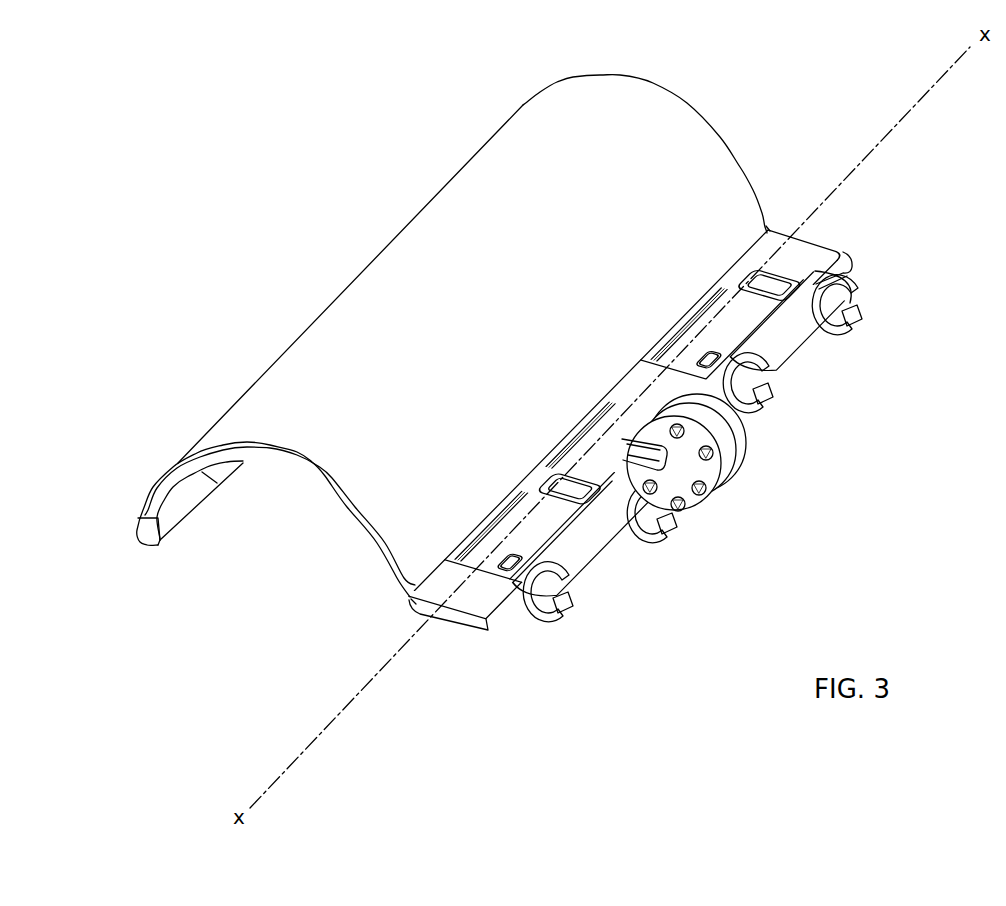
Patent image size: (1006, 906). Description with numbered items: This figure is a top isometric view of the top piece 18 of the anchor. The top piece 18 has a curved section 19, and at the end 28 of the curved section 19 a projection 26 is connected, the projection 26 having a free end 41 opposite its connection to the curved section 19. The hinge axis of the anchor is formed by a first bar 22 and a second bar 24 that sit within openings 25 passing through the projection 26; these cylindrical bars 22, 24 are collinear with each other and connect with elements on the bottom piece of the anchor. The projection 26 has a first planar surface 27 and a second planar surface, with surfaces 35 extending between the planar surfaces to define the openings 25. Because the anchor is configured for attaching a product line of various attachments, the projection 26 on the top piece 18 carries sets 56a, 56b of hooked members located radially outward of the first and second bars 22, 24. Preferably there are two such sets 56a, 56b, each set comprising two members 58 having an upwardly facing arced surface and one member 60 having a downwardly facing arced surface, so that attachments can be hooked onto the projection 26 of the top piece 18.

The top piece 18 is at (262, 225).
The curved section 19 is at (455, 215).
The first bar 22 is at (483, 560).
The second bar 24 is at (681, 360).
The openings 25 is at (718, 281).
The projection 26 is at (830, 254).
The first planar surface 27 is at (586, 455).
The end of the curved section 28 is at (776, 225).
The surfaces 35 is at (765, 282).
The free end 41 is at (838, 270).
The first set of hooked members 56a is at (640, 568).
The second set of hooked members 56b is at (822, 372).
The members having an upwardly facing arced surface 58 is at (838, 312).
The member having a downwardly facing arced surface 60 is at (782, 348).